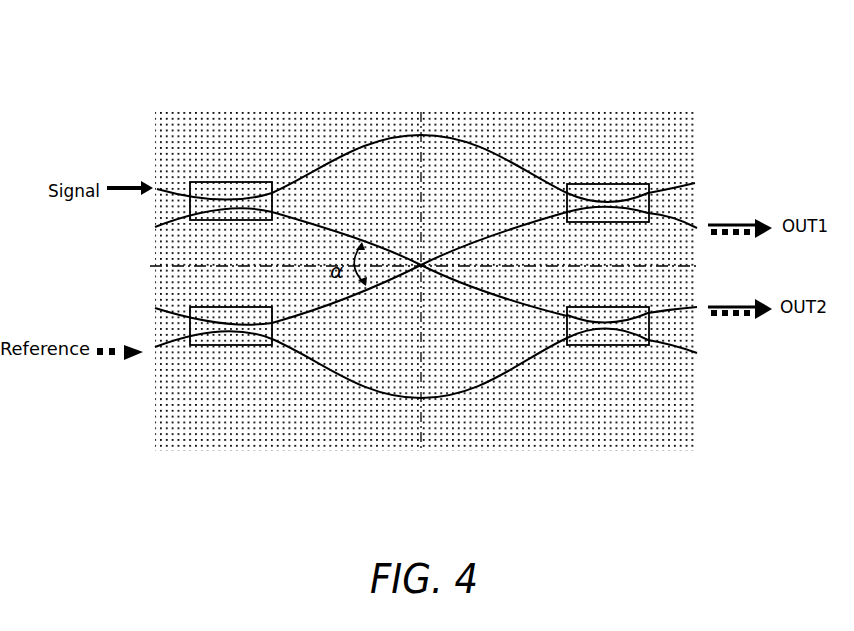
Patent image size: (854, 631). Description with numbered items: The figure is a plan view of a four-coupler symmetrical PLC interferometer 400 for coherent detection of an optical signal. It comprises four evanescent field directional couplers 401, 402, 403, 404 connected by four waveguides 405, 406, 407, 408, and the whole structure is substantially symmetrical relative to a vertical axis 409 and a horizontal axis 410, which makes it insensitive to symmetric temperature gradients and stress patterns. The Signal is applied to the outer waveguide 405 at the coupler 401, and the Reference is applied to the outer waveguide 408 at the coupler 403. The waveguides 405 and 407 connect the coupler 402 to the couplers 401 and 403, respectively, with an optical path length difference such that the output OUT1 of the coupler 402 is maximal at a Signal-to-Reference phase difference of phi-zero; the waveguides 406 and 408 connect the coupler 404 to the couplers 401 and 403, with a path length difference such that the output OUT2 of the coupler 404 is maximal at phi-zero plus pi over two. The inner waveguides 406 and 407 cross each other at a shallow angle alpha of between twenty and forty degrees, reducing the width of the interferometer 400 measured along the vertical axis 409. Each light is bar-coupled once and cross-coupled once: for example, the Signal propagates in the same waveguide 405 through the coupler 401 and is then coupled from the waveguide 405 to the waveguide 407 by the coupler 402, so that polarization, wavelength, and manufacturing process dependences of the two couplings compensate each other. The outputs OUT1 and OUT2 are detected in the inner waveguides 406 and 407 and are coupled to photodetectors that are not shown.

The four-coupler symmetrical PLC interferometer 400 is at (515, 62).
The evanescent field directional coupler 401 is at (220, 182).
The evanescent field directional coupler 402 is at (606, 184).
The evanescent field directional coupler 403 is at (236, 346).
The evanescent field directional coupler 404 is at (617, 346).
The outer waveguide 405 is at (322, 168).
The inner waveguide 406 is at (323, 233).
The inner waveguide 407 is at (505, 226).
The outer waveguide 408 is at (353, 376).
The vertical axis 409 is at (421, 122).
The horizontal axis 410 is at (692, 266).